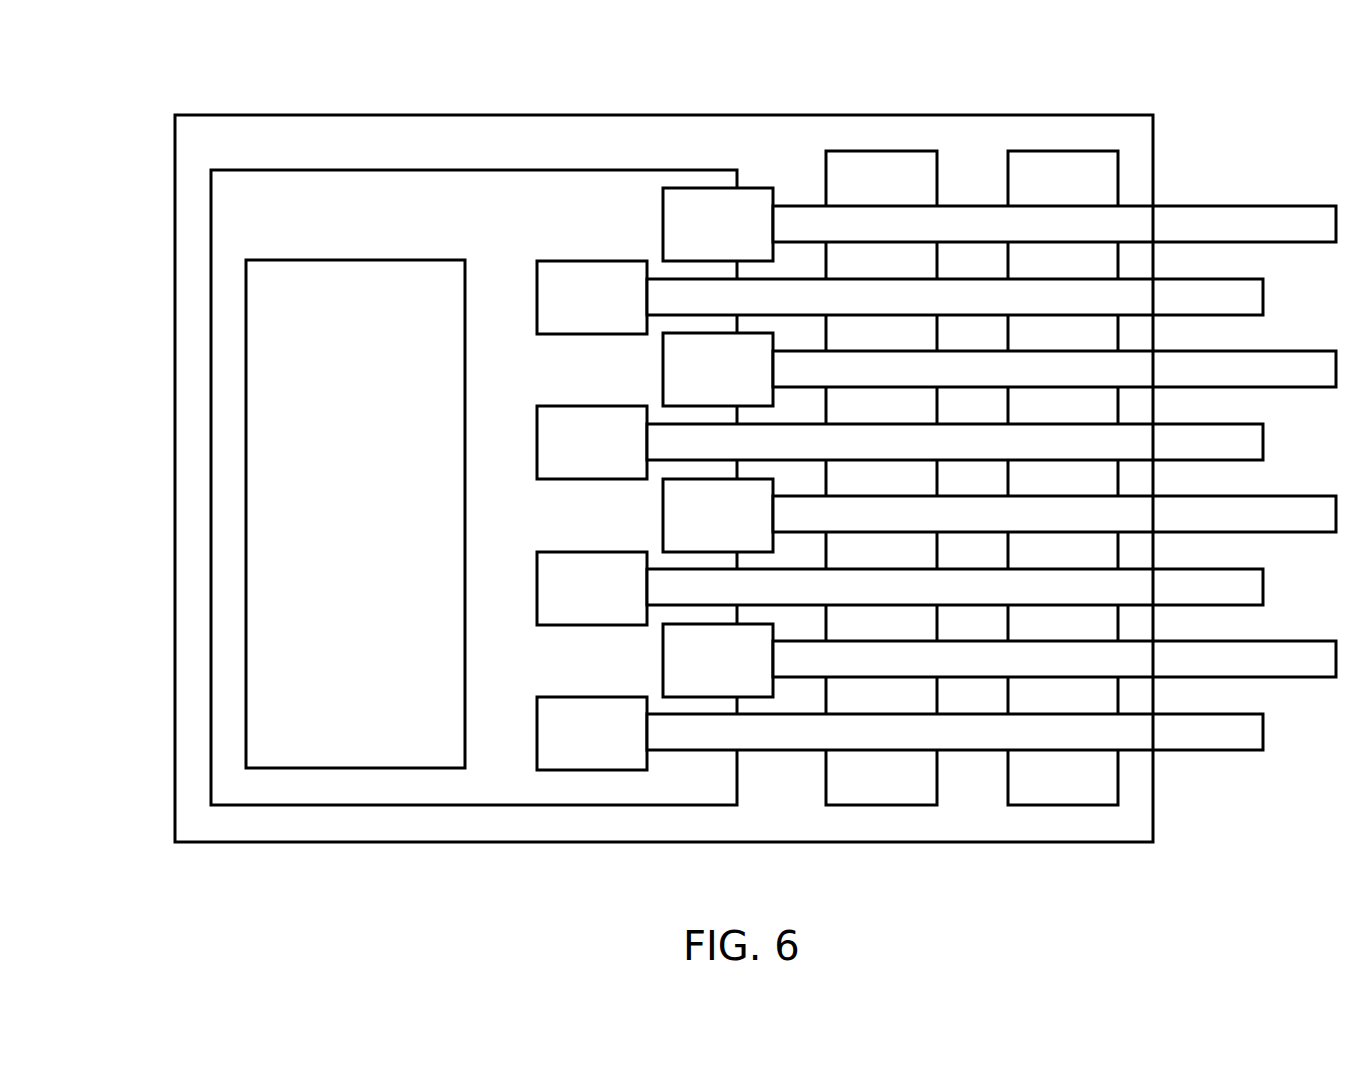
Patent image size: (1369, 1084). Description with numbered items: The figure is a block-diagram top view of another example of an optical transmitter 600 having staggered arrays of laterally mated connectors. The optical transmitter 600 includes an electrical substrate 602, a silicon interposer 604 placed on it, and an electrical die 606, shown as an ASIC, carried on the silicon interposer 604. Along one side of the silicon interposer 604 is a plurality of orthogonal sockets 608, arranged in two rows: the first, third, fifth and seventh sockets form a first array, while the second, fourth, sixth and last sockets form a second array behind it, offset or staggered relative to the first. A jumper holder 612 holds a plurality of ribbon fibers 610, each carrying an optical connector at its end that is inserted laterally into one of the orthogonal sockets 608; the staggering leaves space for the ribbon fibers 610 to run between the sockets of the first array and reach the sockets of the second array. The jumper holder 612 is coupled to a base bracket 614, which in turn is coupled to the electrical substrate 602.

The optical transmitter 600 is at (102, 71).
The electrical substrate 602 is at (682, 149).
The silicon interposer 604 is at (492, 203).
The electrical die 606 is at (373, 539).
The orthogonal sockets 608 is at (563, 749).
The ribbon fibers 610 is at (1261, 206).
The jumper holder 612 is at (1080, 186).
The base bracket 614 is at (900, 186).